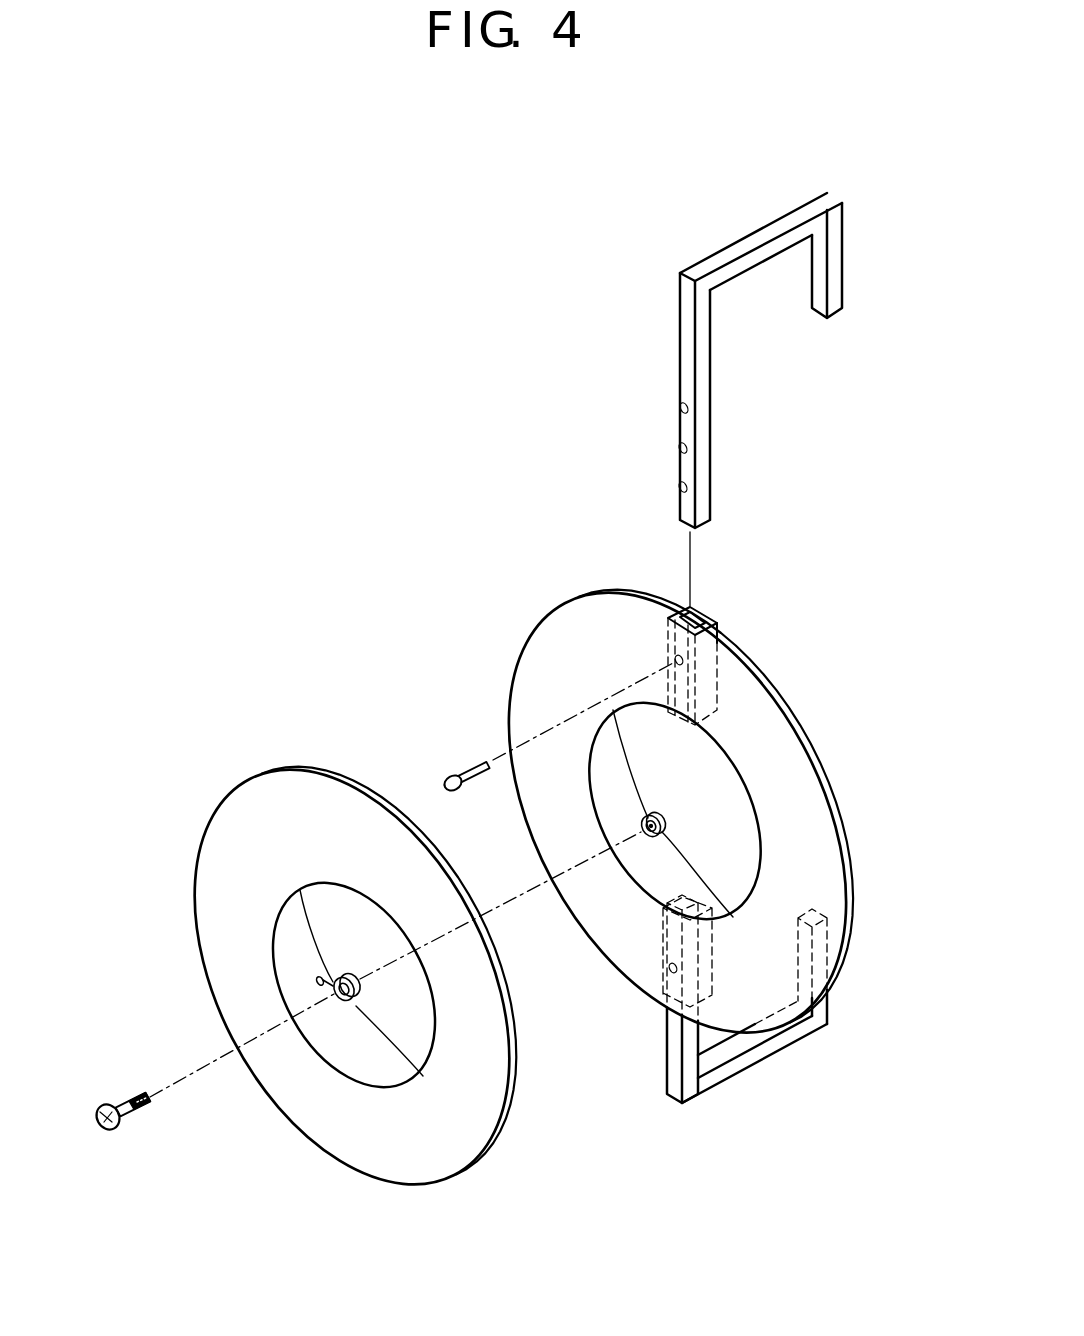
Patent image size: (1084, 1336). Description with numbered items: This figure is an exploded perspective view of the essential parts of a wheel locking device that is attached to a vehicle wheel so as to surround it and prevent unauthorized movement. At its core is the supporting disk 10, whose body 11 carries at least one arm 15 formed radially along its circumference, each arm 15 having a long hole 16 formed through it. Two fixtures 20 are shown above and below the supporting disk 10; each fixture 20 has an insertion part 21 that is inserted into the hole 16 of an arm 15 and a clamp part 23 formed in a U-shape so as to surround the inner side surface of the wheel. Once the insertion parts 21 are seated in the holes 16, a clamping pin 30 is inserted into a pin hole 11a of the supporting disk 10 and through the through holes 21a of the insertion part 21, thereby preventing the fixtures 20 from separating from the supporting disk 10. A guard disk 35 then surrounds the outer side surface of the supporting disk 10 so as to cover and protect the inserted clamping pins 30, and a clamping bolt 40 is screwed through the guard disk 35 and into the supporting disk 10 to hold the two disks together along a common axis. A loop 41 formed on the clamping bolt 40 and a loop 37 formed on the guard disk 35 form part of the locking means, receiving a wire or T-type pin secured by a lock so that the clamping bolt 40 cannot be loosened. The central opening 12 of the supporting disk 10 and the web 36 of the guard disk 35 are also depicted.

The supporting disk 10 is at (684, 813).
The body 11 is at (535, 670).
The pin hole 11a is at (676, 660).
The central hub hole 12 is at (665, 833).
The arm 15 is at (720, 625).
The long hole 16 is at (693, 608).
The fixture 20 is at (732, 699).
The insertion part 21 is at (712, 402).
The through hole 21a is at (682, 485).
The clamp part 23 is at (832, 270).
The clamping pin 30 is at (457, 770).
The guard disk 35 is at (345, 985).
The web 36 is at (423, 1076).
The loop 37 is at (333, 989).
The clamping bolt 40 is at (104, 1123).
The loop 41 is at (100, 1127).